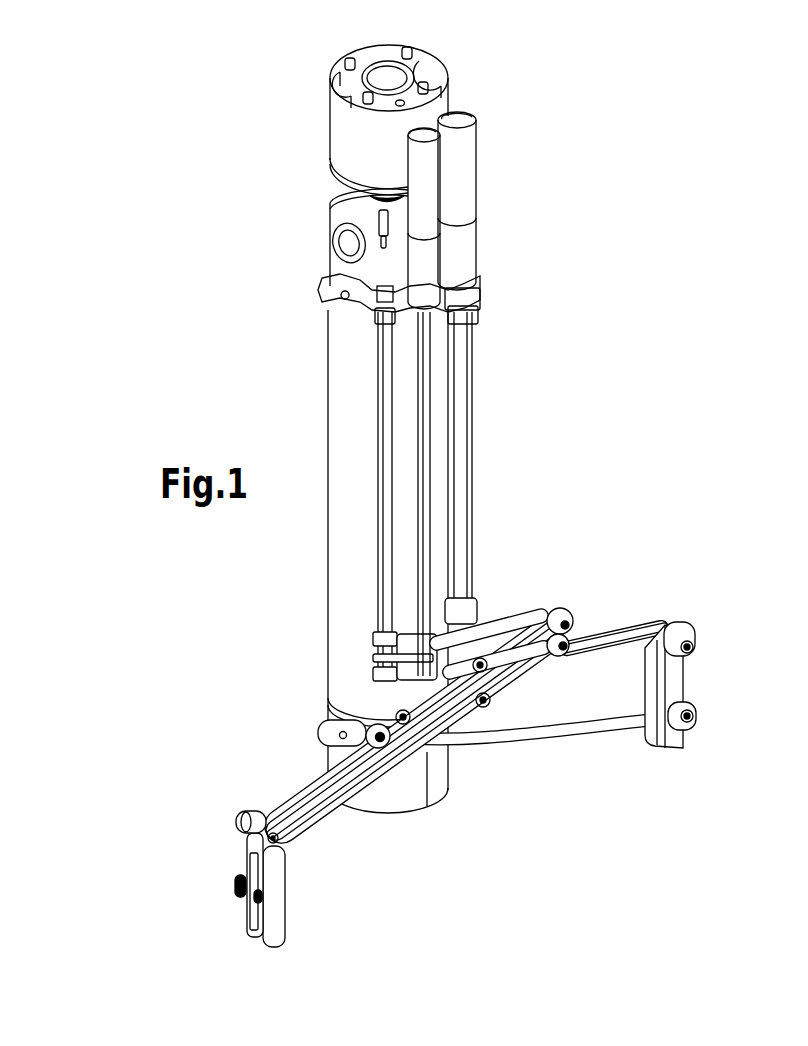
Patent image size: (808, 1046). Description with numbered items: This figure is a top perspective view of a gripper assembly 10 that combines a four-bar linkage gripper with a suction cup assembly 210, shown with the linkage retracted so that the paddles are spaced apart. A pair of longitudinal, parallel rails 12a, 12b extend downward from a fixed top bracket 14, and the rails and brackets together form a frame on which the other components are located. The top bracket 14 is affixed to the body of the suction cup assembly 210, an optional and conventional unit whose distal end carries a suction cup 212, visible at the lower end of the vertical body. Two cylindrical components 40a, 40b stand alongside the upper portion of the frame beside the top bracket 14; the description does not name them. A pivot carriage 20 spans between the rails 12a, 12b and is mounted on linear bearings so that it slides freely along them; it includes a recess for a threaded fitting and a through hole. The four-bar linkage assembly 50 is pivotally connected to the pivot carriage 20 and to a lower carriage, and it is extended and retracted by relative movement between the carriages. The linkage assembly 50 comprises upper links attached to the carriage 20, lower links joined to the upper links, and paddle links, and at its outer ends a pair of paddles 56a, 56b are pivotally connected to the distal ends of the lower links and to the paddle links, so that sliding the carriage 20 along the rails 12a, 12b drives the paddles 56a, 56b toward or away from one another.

The gripper assembly 10 is at (213, 111).
The fixed top bracket 14 is at (320, 286).
The first cylinder 40a is at (426, 212).
The second cylinder 40b is at (458, 190).
The suction cup assembly 210 is at (358, 360).
The suction cup 212 is at (410, 800).
The rail 12a is at (390, 473).
The rail 12b is at (468, 390).
The pivot carriage 20 is at (377, 658).
The four bar linkage assembly 50 is at (697, 573).
The paddle 56a is at (273, 907).
The paddle 56b is at (678, 740).